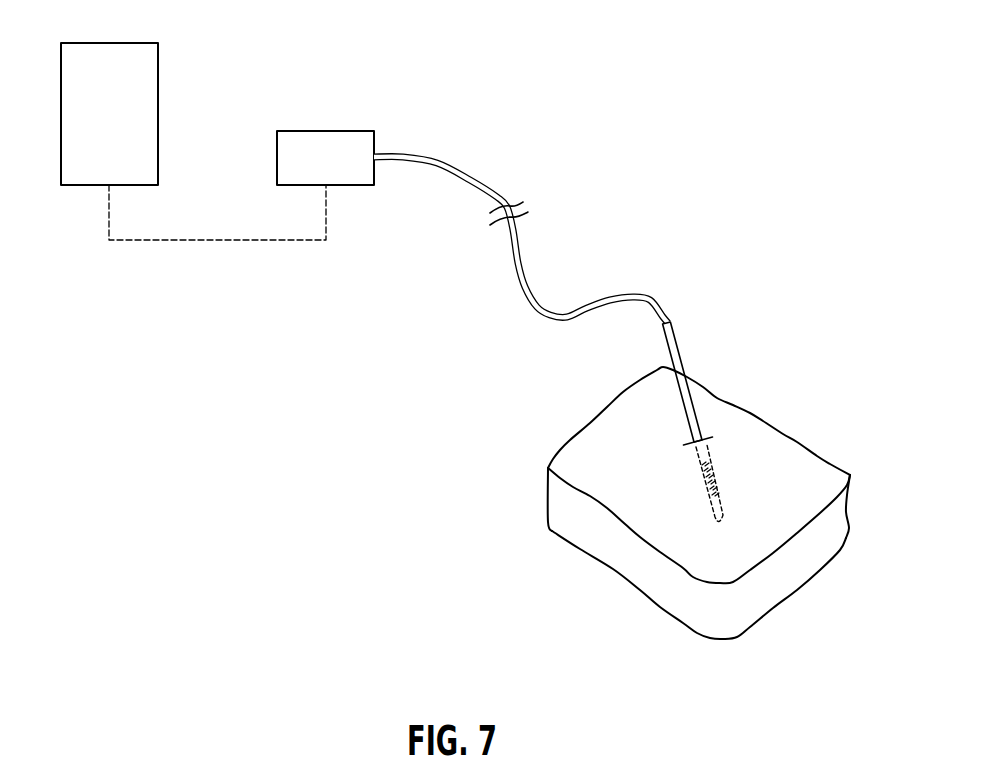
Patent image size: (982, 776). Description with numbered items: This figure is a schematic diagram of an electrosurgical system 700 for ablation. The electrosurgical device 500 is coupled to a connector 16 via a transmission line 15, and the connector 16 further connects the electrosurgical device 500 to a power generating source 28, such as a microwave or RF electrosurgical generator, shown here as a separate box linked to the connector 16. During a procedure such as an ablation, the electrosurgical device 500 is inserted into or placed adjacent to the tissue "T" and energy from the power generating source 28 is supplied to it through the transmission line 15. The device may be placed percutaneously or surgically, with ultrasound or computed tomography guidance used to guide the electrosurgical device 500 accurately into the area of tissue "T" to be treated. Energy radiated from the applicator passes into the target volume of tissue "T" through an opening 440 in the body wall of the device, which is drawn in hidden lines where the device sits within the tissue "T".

The electrosurgical system 700 is at (640, 100).
The power generating source 28 is at (108, 43).
The connector 16 is at (325, 131).
The transmission line 15 is at (522, 277).
The electrosurgical device 500 is at (708, 358).
The opening 440 is at (707, 488).
The tissue T is at (797, 557).